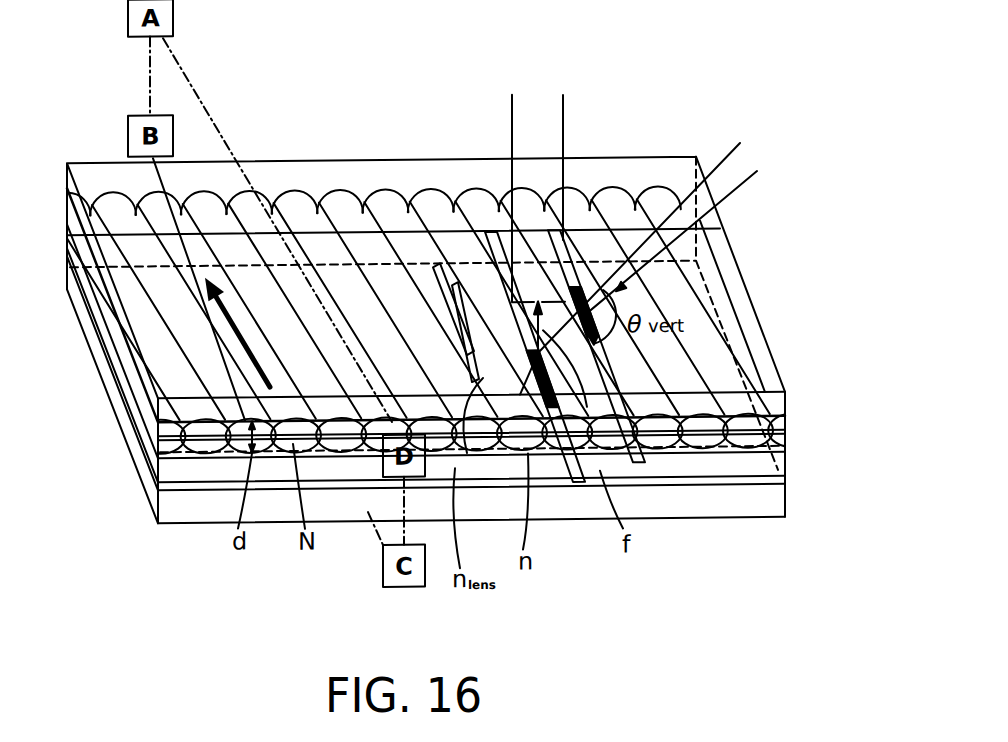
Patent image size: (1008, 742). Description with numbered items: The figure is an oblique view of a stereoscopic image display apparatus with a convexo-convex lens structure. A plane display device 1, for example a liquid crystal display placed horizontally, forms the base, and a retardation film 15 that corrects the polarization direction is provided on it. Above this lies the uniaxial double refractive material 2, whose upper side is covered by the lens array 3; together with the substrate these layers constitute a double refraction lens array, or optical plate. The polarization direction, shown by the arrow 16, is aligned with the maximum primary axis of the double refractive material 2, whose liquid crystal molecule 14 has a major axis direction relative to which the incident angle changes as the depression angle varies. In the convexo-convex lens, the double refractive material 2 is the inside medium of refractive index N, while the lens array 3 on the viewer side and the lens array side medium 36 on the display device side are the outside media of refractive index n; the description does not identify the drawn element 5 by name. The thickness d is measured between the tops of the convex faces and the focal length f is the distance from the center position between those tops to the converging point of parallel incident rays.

The plane display device 1 is at (160, 509).
The double refractive material 2 is at (158, 431).
The lens array 3 is at (193, 404).
The pixel column strip 5 is at (527, 459).
The liquid crystal molecule 14 is at (477, 445).
The retardation film 15 is at (172, 483).
The arrow 16 is at (245, 346).
The lens array side medium 36 is at (175, 459).